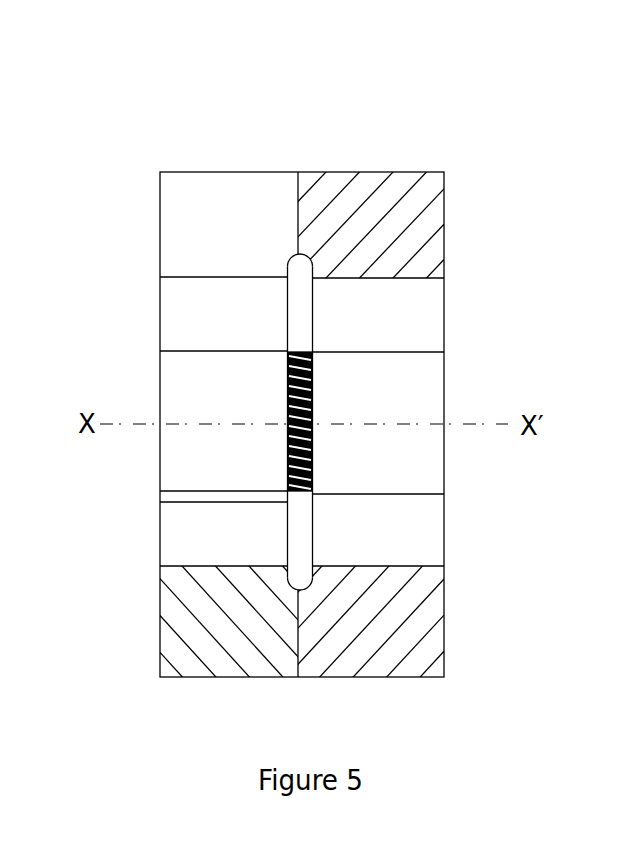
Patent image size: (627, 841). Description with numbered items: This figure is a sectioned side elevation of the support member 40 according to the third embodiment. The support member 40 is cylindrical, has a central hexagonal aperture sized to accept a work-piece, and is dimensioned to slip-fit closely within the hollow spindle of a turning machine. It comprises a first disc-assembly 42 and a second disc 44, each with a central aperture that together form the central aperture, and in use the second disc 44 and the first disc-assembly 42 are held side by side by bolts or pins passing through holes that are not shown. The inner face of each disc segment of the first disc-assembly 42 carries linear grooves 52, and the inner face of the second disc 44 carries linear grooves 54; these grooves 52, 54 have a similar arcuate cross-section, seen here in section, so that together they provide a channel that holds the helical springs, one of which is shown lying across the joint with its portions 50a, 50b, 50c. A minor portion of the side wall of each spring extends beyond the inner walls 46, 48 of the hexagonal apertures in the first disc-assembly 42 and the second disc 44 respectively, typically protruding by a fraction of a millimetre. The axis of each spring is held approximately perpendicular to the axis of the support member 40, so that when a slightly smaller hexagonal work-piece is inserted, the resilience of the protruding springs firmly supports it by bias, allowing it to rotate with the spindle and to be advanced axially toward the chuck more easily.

The support member 40 is at (127, 173).
The first disc-assembly 42 is at (227, 148).
The second disc 44 is at (387, 148).
The inner wall of the hexagonal aperture in the first disc-assembly 46 is at (205, 278).
The inner wall of the hexagonal aperture in the second disc 48 is at (410, 280).
The helical spring 50a is at (298, 307).
The helical spring 50b is at (288, 390).
The helical spring 50c is at (300, 541).
The groove 52 is at (312, 262).
The groove 54 is at (273, 565).